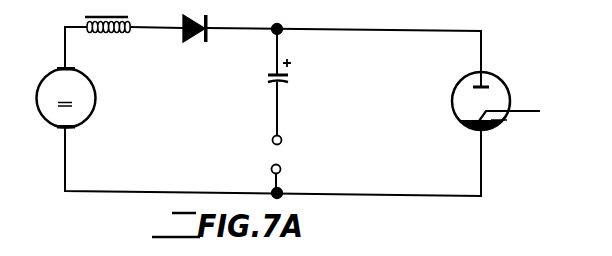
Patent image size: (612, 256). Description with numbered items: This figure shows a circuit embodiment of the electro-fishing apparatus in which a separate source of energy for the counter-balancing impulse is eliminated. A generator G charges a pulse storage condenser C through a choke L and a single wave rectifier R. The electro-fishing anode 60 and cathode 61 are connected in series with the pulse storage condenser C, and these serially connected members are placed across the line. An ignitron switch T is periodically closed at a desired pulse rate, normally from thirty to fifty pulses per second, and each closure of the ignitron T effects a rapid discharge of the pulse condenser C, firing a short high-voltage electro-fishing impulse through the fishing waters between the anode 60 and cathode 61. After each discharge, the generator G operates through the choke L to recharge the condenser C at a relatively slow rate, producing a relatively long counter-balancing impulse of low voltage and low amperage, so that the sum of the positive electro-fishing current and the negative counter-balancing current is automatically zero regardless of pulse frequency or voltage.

The generator G is at (66, 98).
The choke L is at (107, 33).
The single wave rectifier R is at (198, 40).
The pulse storage condenser C is at (270, 77).
The ignitron switch T is at (496, 89).
The electro-fishing anode 60 is at (281, 166).
The electro-fishing cathode 61 is at (272, 141).